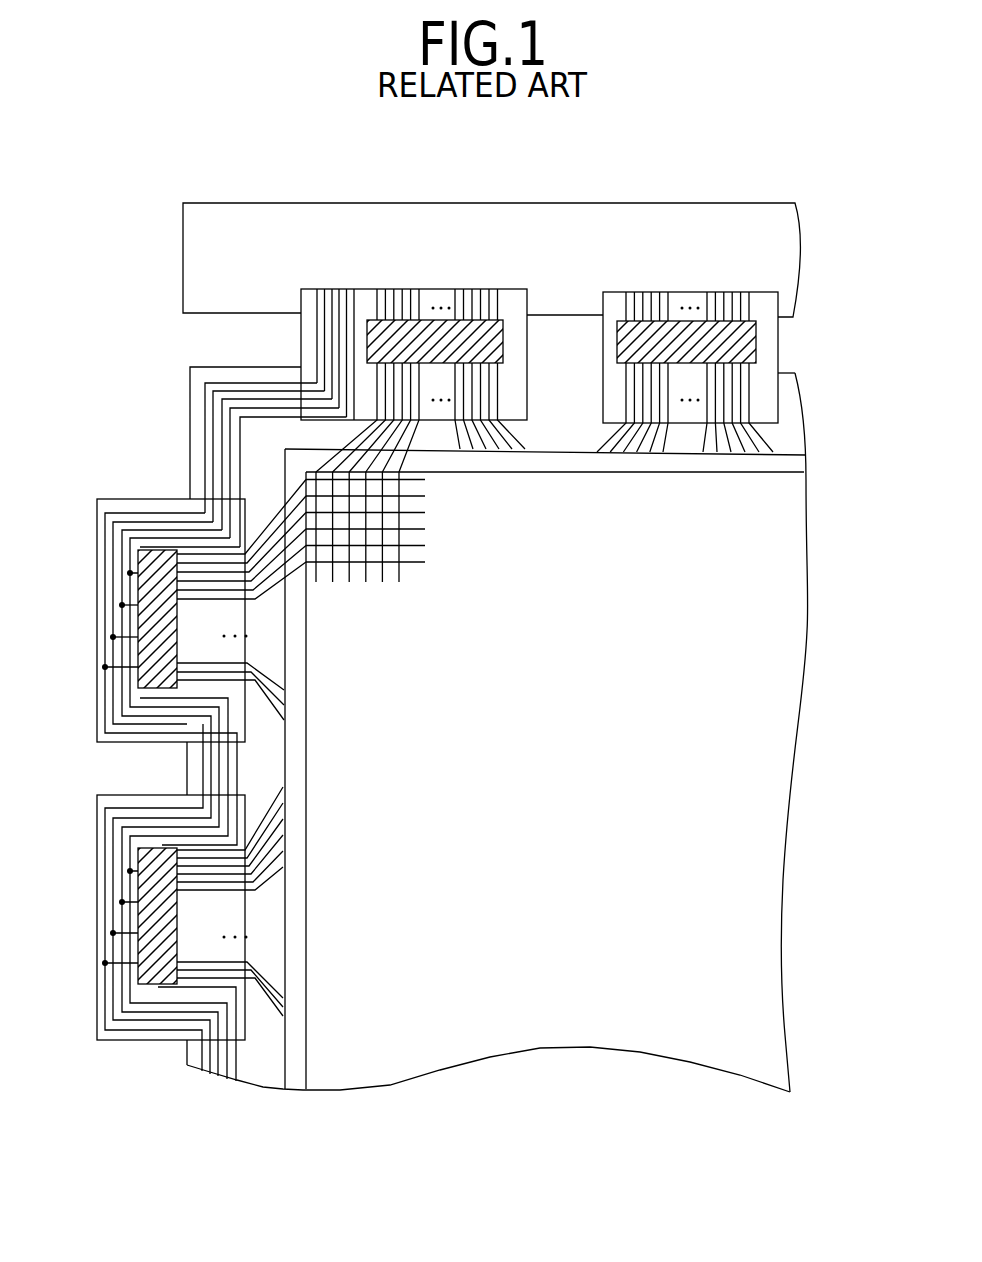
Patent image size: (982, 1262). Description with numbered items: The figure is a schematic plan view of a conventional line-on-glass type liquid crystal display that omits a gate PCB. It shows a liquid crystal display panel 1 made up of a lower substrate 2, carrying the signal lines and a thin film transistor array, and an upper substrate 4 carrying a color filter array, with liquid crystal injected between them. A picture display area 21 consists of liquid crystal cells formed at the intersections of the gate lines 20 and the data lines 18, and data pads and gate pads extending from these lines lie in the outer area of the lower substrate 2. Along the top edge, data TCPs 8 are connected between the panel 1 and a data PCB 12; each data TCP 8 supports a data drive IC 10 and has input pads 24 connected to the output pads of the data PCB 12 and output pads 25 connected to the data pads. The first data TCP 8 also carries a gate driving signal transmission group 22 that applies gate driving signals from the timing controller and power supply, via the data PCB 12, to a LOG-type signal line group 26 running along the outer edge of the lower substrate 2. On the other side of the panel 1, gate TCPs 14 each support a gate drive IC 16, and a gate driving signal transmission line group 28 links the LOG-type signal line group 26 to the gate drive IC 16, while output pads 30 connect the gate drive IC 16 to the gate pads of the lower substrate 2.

The liquid crystal display panel 1 is at (832, 629).
The lower substrate 2 is at (796, 413).
The upper substrate 4 is at (803, 465).
The data TCP 8 is at (776, 368).
The data drive IC 10 is at (757, 335).
The data PCB 12 is at (793, 256).
The gate TCP 14 is at (113, 637).
The gate drive IC 16 is at (122, 605).
The data lines 18 is at (366, 574).
The gate lines 20 is at (418, 529).
The picture display area 21 is at (616, 767).
The gate driving signal transmission group 22 is at (305, 330).
The input pads 24 is at (470, 314).
The output pads 25 is at (497, 403).
The LOG-type signal line group 26 is at (193, 405).
The gate driving signal transmission line group 28 is at (88, 562).
The output pads 30 is at (242, 565).